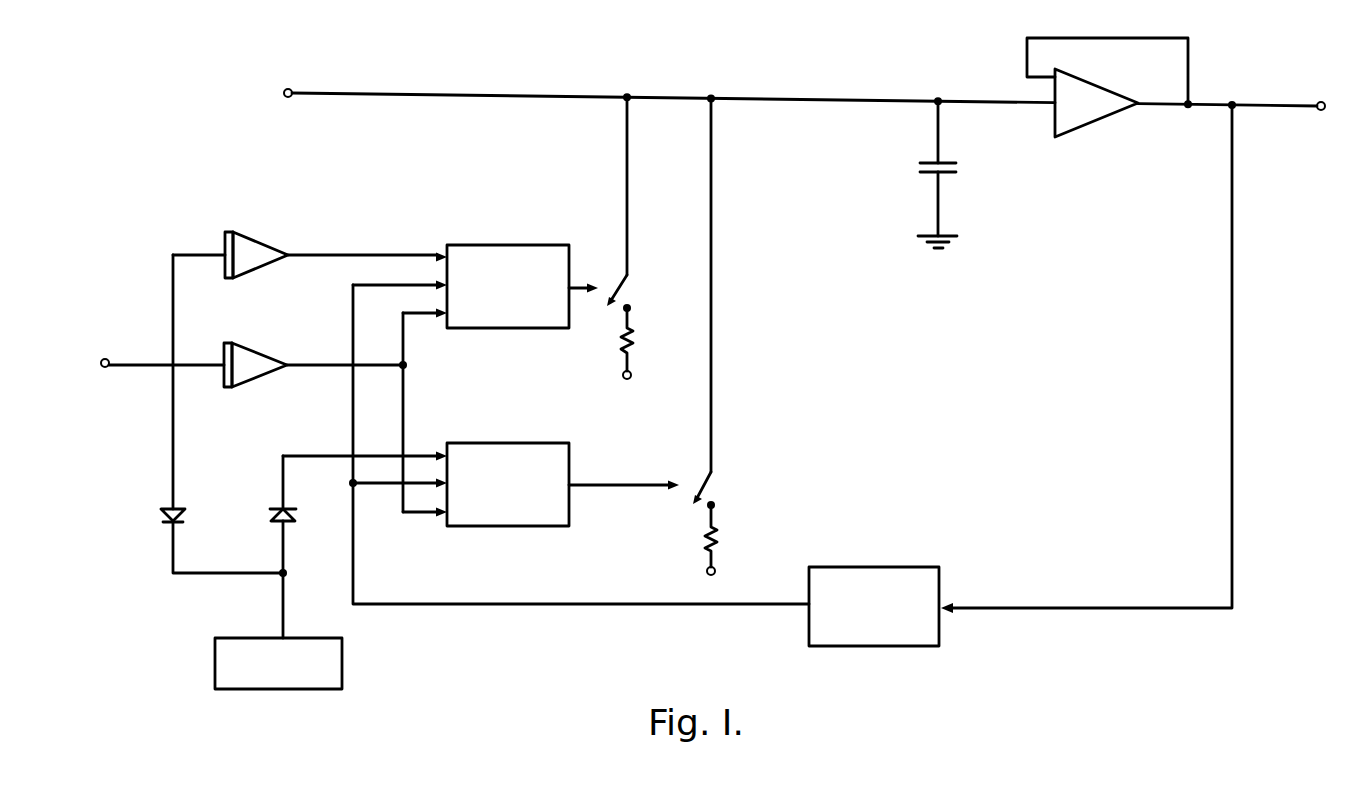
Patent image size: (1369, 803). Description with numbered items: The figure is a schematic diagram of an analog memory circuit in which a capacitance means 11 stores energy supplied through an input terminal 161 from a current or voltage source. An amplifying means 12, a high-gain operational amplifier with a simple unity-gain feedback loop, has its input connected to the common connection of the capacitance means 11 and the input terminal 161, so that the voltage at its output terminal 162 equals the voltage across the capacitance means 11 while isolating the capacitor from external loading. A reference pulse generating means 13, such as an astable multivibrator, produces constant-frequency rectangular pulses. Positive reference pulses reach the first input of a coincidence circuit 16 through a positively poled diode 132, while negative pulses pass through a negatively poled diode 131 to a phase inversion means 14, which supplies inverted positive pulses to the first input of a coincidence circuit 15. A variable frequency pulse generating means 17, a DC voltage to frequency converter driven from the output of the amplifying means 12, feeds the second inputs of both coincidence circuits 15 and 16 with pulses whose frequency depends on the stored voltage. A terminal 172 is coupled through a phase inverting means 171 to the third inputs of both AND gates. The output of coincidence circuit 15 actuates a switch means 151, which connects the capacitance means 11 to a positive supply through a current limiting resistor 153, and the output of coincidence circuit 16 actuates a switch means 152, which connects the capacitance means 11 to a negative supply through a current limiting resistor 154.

The capacitance means 11 is at (956, 168).
The amplifying means 12 is at (1093, 122).
The reference pulse generating means 13 is at (263, 689).
The phase inversion means 14 is at (262, 240).
The coincidence circuit 15 is at (523, 244).
The coincidence circuit 16 is at (520, 442).
The variable frequency pulse generating means 17 is at (860, 646).
The negatively poled diode 131 is at (184, 513).
The positively poled diode 132 is at (270, 512).
The switch means 151 is at (619, 289).
The switch means 152 is at (703, 486).
The current limiting resistor 153 is at (633, 341).
The current limiting resistor 154 is at (717, 538).
The input terminal 161 is at (290, 98).
The output terminal 162 is at (1323, 111).
The phase inverting means 171 is at (259, 350).
The terminal 172 is at (105, 368).